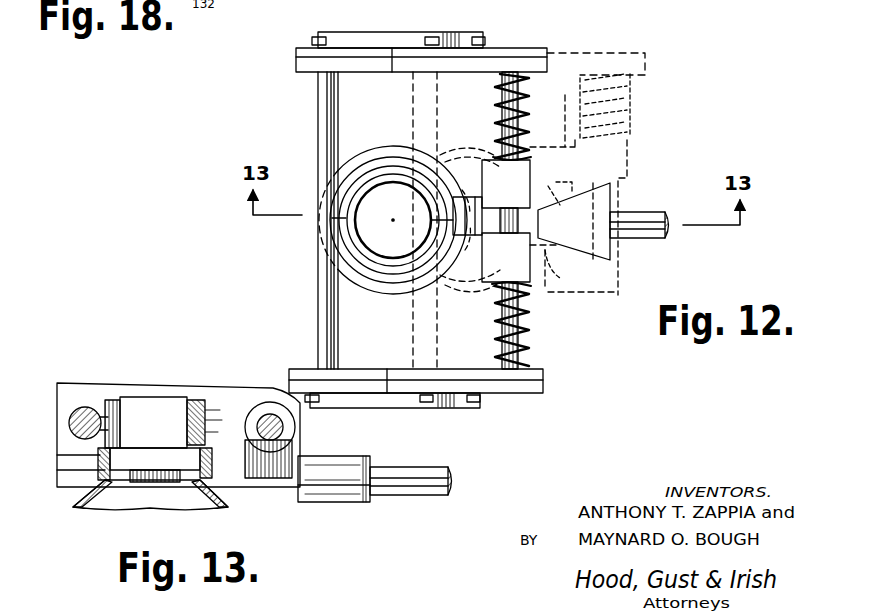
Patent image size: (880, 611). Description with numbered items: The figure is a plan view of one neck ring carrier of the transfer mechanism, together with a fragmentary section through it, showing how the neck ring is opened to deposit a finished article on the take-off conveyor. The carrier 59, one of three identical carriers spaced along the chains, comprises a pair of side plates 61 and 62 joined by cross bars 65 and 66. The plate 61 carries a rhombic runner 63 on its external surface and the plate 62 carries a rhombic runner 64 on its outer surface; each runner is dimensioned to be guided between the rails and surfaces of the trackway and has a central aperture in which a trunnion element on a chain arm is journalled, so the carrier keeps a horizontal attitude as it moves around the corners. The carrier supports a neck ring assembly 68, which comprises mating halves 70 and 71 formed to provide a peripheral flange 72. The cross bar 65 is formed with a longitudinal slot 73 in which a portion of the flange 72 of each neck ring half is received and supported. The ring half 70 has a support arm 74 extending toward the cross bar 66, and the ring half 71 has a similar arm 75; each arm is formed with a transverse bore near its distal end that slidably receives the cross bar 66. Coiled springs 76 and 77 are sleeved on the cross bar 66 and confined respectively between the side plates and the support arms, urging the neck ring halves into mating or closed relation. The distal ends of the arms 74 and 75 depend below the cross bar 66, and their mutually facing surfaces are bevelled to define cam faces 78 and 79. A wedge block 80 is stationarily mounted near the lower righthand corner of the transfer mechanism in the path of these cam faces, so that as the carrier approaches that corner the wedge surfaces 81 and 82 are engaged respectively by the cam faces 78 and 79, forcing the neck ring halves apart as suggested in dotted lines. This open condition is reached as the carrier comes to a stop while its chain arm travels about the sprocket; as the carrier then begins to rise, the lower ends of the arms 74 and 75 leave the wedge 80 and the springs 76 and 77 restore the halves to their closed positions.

In FIG. 12, the carrier 59 is at (520, 49).
In FIG. 12, the side plate 61 is at (312, 68).
In FIG. 13, the side plate 61 is at (150, 383).
In FIG. 12, the side plate 62 is at (302, 368).
In FIG. 12, the rhombic runner 63 is at (358, 32).
In FIG. 12, the rhombic runner 64 is at (405, 409).
In FIG. 12, the cross bar 65 is at (320, 104).
In FIG. 13, the cross bar 65 is at (62, 458).
In FIG. 12, the cross bar 66 is at (522, 120).
In FIG. 13, the cross bar 66 is at (290, 429).
In FIG. 12, the neck ring assembly 68 is at (390, 146).
In FIG. 12, the ring half 70 is at (393, 156).
In FIG. 13, the ring half 70 is at (215, 463).
In FIG. 12, the ring half 71 is at (392, 291).
In FIG. 12, the peripheral flange 72 is at (366, 274).
In FIG. 13, the peripheral flange 72 is at (96, 425).
In FIG. 12, the longitudinal slot 73 is at (332, 140).
In FIG. 13, the longitudinal slot 73 is at (69, 424).
In FIG. 12, the support arm 74 is at (468, 160).
In FIG. 13, the support arm 74 is at (218, 400).
In FIG. 12, the support arm 75 is at (463, 272).
In FIG. 12, the coiled spring 76 is at (497, 97).
In FIG. 12, the coiled spring 77 is at (492, 343).
In FIG. 12, the cam face 78 is at (494, 213).
In FIG. 13, the cam face 78 is at (268, 462).
In FIG. 12, the cam face 79 is at (503, 238).
In FIG. 12, the wedge block 80 is at (583, 230).
In FIG. 13, the wedge block 80 is at (343, 457).
In FIG. 12, the wedge surface 81 is at (568, 177).
In FIG. 12, the wedge surface 82 is at (567, 258).
In FIG. 13, the wedge surface 82 is at (332, 486).